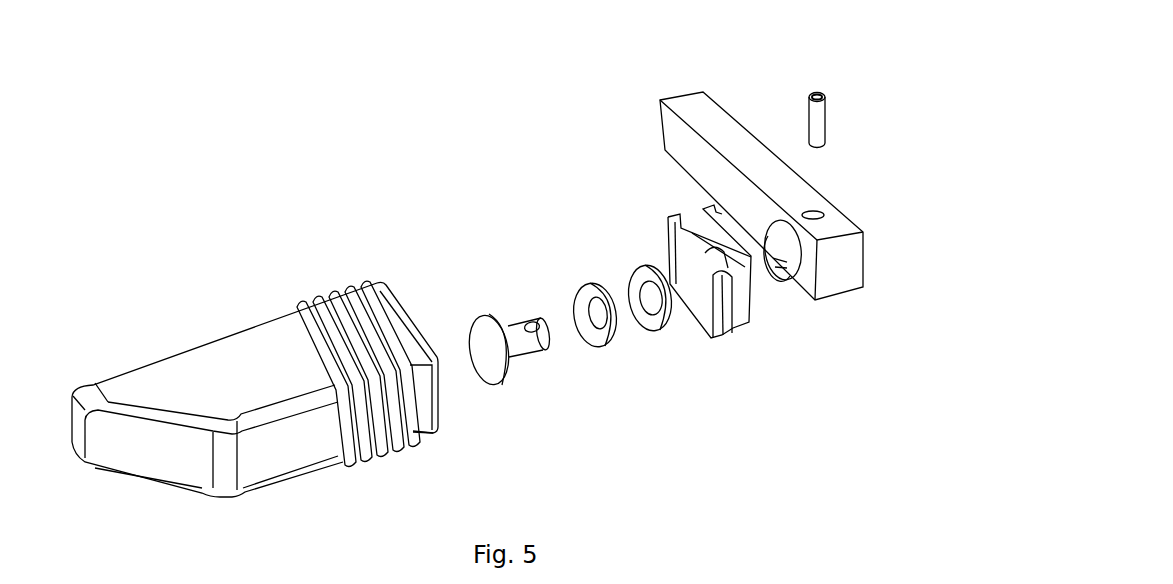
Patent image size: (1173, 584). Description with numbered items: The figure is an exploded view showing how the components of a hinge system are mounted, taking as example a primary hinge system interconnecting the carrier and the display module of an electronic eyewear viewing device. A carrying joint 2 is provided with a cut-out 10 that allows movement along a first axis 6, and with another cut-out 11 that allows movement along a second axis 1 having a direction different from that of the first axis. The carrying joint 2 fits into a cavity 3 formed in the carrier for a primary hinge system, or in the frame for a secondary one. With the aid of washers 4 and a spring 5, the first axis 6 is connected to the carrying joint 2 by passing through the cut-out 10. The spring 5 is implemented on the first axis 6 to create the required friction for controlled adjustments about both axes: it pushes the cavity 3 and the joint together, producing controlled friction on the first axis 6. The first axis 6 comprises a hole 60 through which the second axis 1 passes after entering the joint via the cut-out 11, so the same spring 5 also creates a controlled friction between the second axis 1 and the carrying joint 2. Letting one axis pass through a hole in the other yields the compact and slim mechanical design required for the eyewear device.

The second axis 1 is at (816, 93).
The carrying joint 2 is at (825, 313).
The cavity 3 is at (438, 430).
The washers 4 is at (643, 275).
The spring 5 is at (588, 293).
The first axis 6 is at (485, 312).
The hole 60 is at (531, 321).
The cut-out 10 is at (768, 262).
The cut-out 11 is at (815, 209).